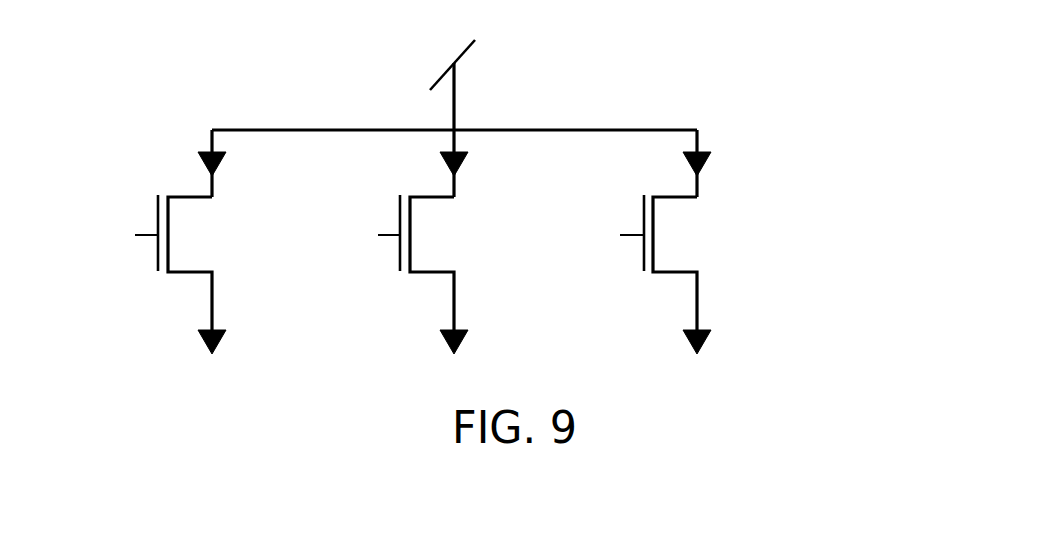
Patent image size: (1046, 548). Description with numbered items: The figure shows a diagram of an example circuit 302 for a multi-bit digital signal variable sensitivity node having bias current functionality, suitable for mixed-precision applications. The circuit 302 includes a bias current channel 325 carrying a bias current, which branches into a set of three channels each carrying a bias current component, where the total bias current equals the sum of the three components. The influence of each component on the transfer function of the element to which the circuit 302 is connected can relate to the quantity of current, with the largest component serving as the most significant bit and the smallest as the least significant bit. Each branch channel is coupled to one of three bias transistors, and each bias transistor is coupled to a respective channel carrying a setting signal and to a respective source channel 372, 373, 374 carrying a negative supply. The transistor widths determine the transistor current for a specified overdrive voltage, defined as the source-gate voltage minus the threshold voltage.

The circuit 302 is at (768, 65).
The bias current channel 325 is at (455, 108).
The source channel 372 is at (697, 282).
The source channel 373 is at (454, 282).
The source channel 374 is at (212, 280).